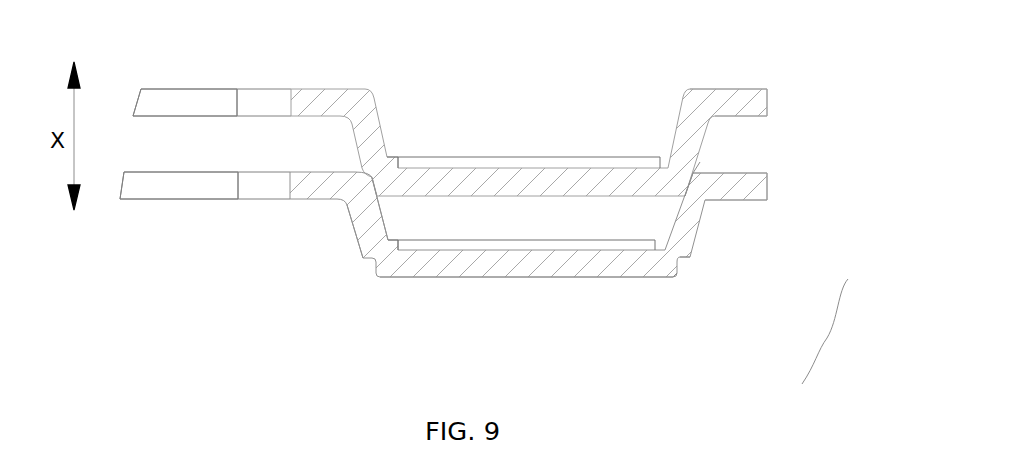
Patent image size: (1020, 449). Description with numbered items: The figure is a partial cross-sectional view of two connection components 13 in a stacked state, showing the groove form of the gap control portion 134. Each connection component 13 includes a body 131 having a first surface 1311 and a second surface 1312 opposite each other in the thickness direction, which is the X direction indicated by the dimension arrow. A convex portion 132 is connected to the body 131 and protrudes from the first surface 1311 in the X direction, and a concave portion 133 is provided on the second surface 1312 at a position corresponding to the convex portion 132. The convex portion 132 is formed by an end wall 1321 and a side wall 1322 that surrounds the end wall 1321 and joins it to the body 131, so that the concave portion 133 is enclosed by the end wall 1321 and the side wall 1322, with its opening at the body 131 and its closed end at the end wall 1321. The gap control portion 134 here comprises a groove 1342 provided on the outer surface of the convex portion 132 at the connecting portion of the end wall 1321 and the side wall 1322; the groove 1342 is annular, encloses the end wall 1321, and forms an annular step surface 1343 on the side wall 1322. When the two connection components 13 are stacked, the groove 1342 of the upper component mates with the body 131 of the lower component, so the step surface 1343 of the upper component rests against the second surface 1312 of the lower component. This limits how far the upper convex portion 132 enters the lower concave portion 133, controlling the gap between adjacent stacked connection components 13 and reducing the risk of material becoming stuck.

The connection component 13 is at (217, 88).
The body 131 is at (300, 95).
The convex portion 132 is at (320, 174).
The concave portion 133 is at (547, 92).
The first surface 1311 is at (188, 143).
The second surface 1312 is at (763, 71).
The end wall 1321 is at (497, 282).
The side wall 1322 is at (349, 236).
The gap control portion 134 is at (838, 331).
The groove 1342 is at (708, 202).
The step surface 1343 is at (700, 162).